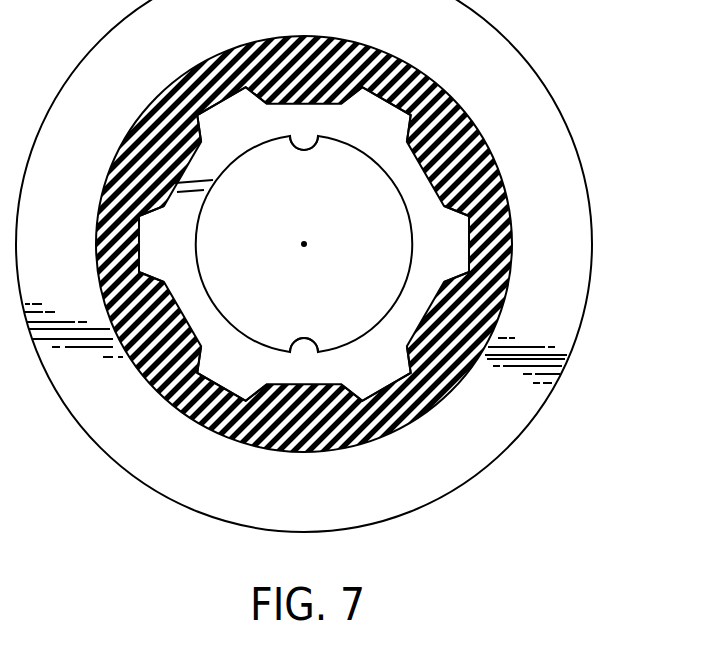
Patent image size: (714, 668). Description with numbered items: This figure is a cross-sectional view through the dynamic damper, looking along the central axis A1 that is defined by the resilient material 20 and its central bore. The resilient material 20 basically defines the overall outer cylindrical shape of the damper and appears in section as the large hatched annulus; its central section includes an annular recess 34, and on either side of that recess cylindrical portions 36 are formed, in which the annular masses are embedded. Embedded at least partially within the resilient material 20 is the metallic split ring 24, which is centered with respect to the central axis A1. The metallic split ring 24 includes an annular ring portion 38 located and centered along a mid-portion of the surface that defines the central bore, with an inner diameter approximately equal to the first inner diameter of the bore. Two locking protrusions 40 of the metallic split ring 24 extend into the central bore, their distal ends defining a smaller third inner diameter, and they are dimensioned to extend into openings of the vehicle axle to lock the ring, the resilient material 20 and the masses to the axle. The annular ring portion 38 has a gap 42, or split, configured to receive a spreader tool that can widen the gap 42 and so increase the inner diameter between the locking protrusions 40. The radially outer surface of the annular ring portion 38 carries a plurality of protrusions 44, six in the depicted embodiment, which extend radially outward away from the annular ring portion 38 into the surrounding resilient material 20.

The resilient material 20 is at (152, 146).
The metallic split ring 24 is at (428, 253).
The annular recess 34 is at (487, 418).
The cylindrical portions 36 is at (577, 325).
The annular ring portion 38 is at (415, 182).
The locking protrusions 40 is at (304, 340).
The gap 42 is at (200, 188).
The protrusions 44 is at (380, 383).
The central axis A1 is at (303, 241).